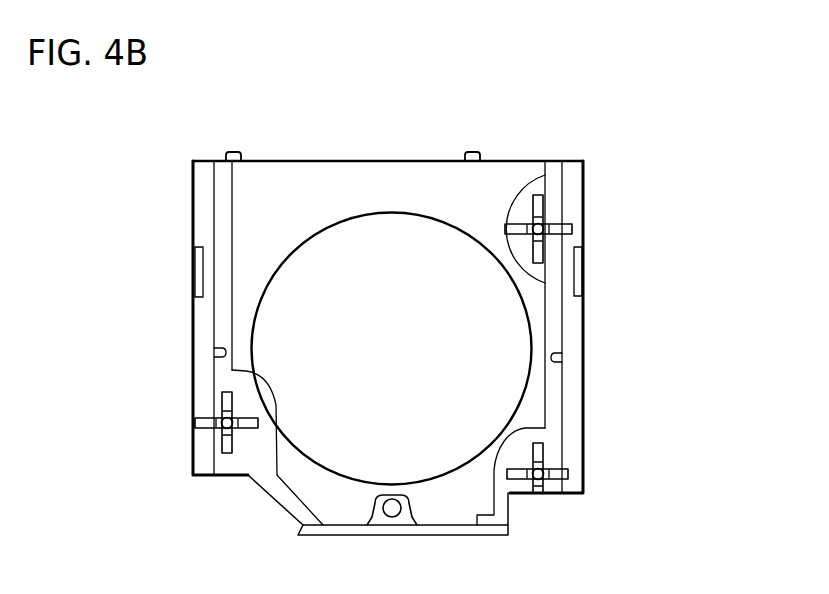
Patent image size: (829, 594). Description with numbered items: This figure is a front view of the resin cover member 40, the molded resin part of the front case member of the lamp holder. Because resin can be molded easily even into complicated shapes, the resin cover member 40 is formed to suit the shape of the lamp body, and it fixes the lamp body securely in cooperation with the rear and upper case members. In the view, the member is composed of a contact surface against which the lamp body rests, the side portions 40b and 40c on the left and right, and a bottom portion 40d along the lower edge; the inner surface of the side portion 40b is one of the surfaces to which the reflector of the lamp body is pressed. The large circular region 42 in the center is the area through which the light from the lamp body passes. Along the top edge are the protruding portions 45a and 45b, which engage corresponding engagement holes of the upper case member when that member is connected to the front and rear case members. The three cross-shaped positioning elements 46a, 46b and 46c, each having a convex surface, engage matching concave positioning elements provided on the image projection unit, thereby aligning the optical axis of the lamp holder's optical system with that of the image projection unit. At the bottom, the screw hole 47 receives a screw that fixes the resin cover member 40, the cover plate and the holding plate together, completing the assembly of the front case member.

The resin cover member 40 is at (398, 112).
The side portion 40b is at (585, 330).
The side portion 40c is at (192, 330).
The bottom portion 40d is at (347, 530).
The circular opening 42 is at (272, 276).
The protruding portion 45a is at (483, 151).
The protruding portion 45b is at (227, 147).
The positioning element 46a is at (545, 198).
The positioning element 46b is at (545, 458).
The positioning element 46c is at (220, 404).
The screw hole 47 is at (403, 513).